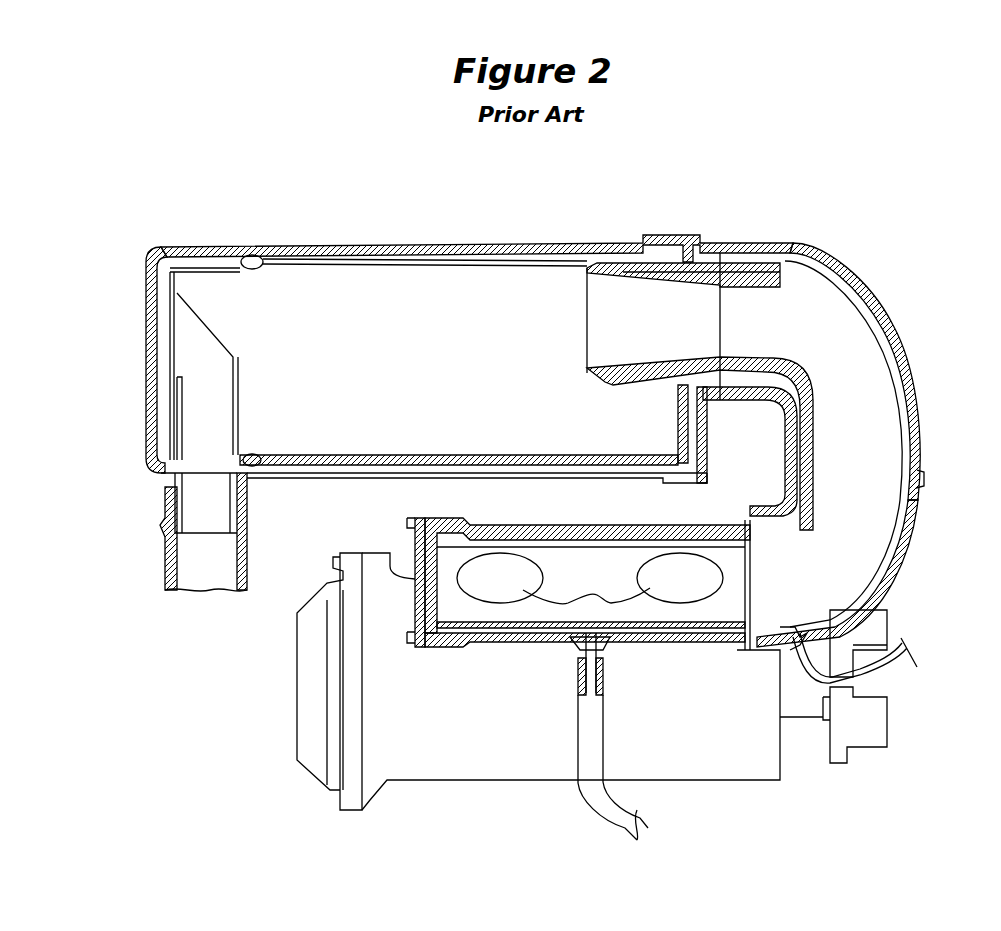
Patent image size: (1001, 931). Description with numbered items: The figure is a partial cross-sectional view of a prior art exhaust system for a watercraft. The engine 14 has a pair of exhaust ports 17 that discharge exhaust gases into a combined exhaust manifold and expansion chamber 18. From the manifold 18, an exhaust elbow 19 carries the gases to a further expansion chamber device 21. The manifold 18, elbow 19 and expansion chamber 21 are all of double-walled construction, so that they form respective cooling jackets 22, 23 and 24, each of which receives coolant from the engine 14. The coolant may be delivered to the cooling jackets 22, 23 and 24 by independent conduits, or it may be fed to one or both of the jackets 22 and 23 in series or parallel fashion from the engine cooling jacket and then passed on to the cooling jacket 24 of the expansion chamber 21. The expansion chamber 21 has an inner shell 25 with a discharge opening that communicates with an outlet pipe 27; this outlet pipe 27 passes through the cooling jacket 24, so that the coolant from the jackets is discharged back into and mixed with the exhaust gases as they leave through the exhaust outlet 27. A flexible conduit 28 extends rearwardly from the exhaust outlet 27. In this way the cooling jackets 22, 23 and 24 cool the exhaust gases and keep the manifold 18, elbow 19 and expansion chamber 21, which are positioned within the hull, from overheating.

The engine 14 is at (693, 763).
The exhaust ports 17 is at (590, 578).
The combined exhaust manifold and expansion chamber 18 is at (653, 650).
The exhaust elbow 19 is at (926, 410).
The expansion chamber device 21 is at (537, 241).
The cooling jacket 22 is at (433, 648).
The cooling jacket 23 is at (903, 536).
The cooling jacket 24 is at (193, 262).
The inner shell 25 is at (297, 258).
The outlet pipe 27 is at (165, 481).
The flexible conduit 28 is at (253, 558).